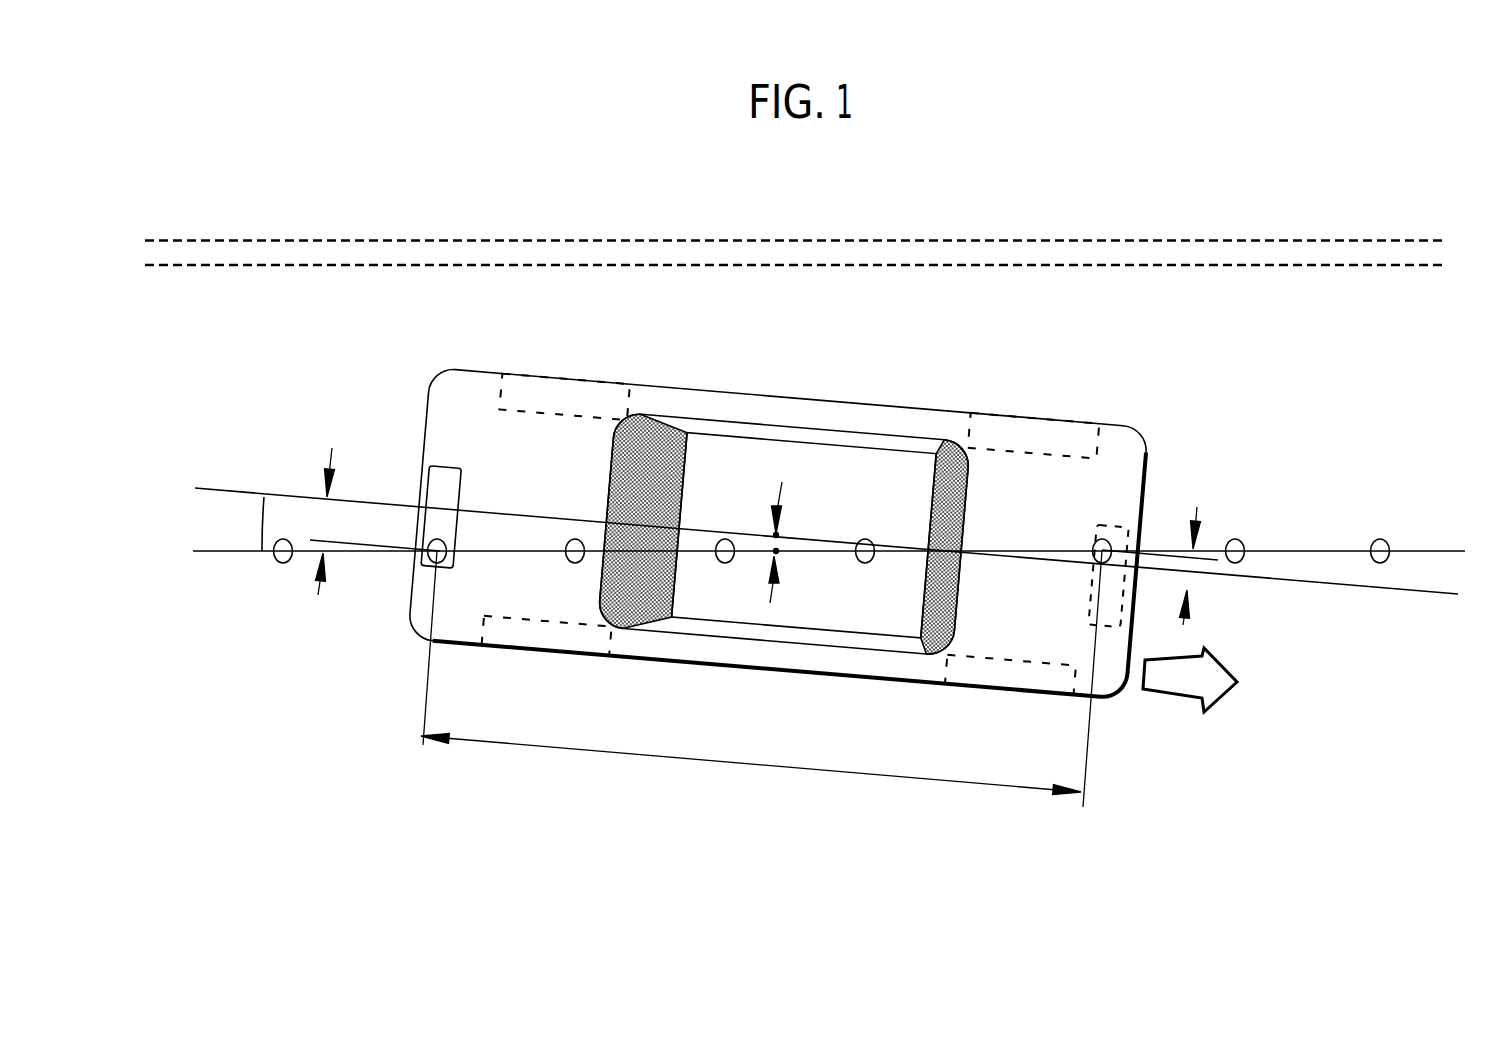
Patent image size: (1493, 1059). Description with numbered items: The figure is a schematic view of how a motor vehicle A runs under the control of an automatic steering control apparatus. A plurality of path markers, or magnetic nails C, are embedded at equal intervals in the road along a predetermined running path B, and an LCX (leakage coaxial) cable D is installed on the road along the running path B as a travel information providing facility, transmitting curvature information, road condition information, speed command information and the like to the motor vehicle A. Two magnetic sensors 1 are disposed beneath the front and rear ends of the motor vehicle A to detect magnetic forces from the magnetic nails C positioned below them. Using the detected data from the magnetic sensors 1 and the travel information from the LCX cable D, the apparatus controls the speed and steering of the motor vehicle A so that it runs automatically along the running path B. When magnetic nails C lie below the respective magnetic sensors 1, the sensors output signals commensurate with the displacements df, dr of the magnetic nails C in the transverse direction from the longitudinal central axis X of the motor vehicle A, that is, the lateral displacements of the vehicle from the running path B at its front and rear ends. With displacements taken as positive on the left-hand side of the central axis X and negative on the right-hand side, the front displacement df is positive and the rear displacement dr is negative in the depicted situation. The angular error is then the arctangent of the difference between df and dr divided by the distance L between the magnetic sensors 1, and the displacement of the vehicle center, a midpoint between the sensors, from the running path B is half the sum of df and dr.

The magnetic sensor 1 is at (1203, 347).
The motor vehicle A is at (880, 392).
The running path B is at (1432, 550).
The magnetic nail C is at (283, 563).
The LCX cable D is at (1010, 238).
The longitudinal central axis X is at (1398, 592).
The displacement at rear end dr is at (340, 521).
The displacement at front end df is at (1203, 566).
The distance between the magnetic sensors L is at (761, 679).